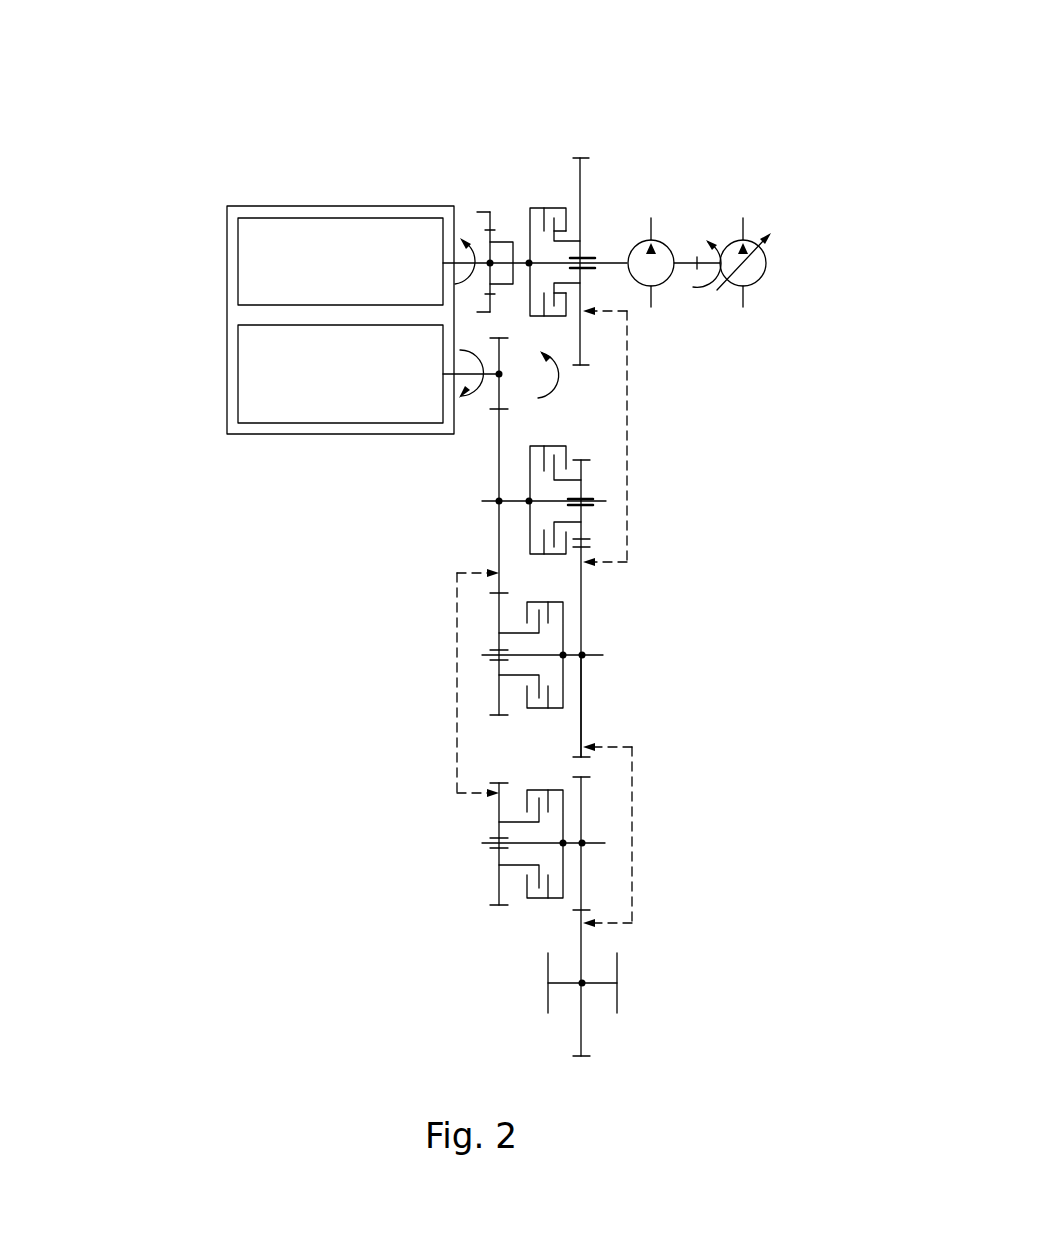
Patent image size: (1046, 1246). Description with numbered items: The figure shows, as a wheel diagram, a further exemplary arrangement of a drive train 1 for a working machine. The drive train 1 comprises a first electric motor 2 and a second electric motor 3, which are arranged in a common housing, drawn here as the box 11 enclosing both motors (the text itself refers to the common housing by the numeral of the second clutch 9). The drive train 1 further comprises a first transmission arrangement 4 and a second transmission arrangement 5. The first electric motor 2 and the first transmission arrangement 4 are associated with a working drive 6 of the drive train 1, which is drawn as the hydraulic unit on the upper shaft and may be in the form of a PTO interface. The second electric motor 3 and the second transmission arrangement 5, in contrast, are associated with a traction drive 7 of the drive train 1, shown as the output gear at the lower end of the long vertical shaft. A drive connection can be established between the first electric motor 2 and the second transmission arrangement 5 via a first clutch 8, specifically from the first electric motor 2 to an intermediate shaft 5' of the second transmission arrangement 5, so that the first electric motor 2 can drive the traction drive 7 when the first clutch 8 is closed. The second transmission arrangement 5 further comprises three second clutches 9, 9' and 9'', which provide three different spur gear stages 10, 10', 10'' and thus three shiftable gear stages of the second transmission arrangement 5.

The drive train 1 is at (441, 92).
The first electric motor 2 is at (250, 267).
The second electric motor 3 is at (250, 380).
The first transmission arrangement 4 is at (509, 222).
The second transmission arrangement 5 is at (665, 758).
The intermediate shaft 5' is at (596, 645).
The working drive 6 is at (704, 180).
The traction drive 7 is at (617, 968).
The first clutch 8 is at (557, 208).
The second clutch 9 is at (547, 468).
The second clutch 9' is at (579, 635).
The second clutch 9'' is at (543, 810).
The spur gear stage 10 is at (432, 526).
The spur gear stage 10' is at (645, 706).
The spur gear stage 10'' is at (414, 781).
The electric drive unit housing 11 is at (357, 207).